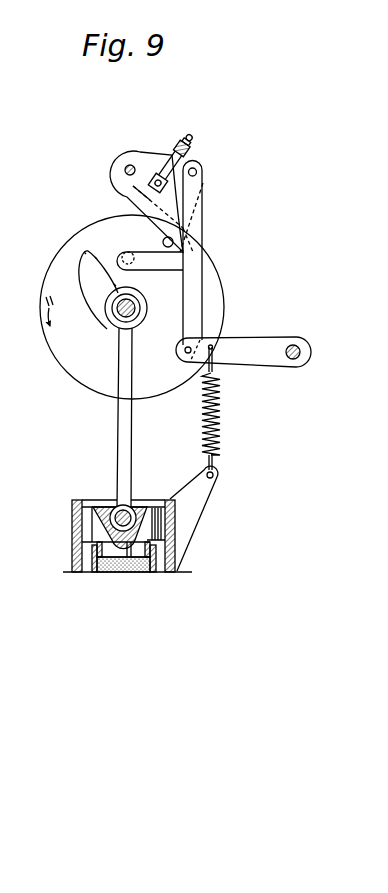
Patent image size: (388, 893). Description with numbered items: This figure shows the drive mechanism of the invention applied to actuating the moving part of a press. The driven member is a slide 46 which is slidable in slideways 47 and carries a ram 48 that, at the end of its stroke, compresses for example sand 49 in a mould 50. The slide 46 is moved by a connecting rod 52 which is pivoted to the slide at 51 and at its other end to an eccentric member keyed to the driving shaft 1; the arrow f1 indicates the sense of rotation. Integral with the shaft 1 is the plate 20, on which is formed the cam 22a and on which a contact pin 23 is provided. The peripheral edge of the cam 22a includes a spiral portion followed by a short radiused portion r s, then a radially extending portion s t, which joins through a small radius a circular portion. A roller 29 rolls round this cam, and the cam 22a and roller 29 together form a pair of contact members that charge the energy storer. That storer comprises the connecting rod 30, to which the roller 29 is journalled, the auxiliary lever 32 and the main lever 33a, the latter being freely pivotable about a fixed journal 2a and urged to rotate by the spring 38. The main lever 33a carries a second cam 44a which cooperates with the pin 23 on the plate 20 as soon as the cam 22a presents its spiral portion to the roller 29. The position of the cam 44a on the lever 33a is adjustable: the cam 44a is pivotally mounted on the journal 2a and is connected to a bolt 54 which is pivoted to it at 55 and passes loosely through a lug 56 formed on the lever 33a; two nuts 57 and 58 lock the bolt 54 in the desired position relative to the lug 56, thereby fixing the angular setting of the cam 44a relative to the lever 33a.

The driving shaft 1 is at (139, 315).
The fixed journal 2a is at (128, 166).
The plate 20 is at (96, 373).
The cam 22a is at (90, 280).
The contact member or pin 23 is at (164, 240).
The contact member or roller 29 is at (123, 254).
The connecting rod 30 is at (186, 281).
The auxiliary lever 32 is at (256, 325).
The main lever 33a is at (150, 150).
The spring 38 is at (222, 429).
The cam 44a is at (148, 186).
The slide 46 is at (95, 513).
The slideways 47 is at (72, 517).
The ram 48 is at (110, 548).
The sand 49 is at (176, 561).
The mould 50 is at (83, 560).
The pivot 51 is at (140, 512).
The connecting rod 52 is at (119, 424).
The bolt 54 is at (190, 145).
The pivot 55 is at (156, 186).
The lug 56 is at (176, 150).
The nut 57 is at (191, 155).
The nut 58 is at (203, 165).
The cam profile point r is at (80, 253).
The cam profile point s is at (95, 262).
The cam profile point t is at (113, 288).
The direction arrow f1 is at (57, 316).